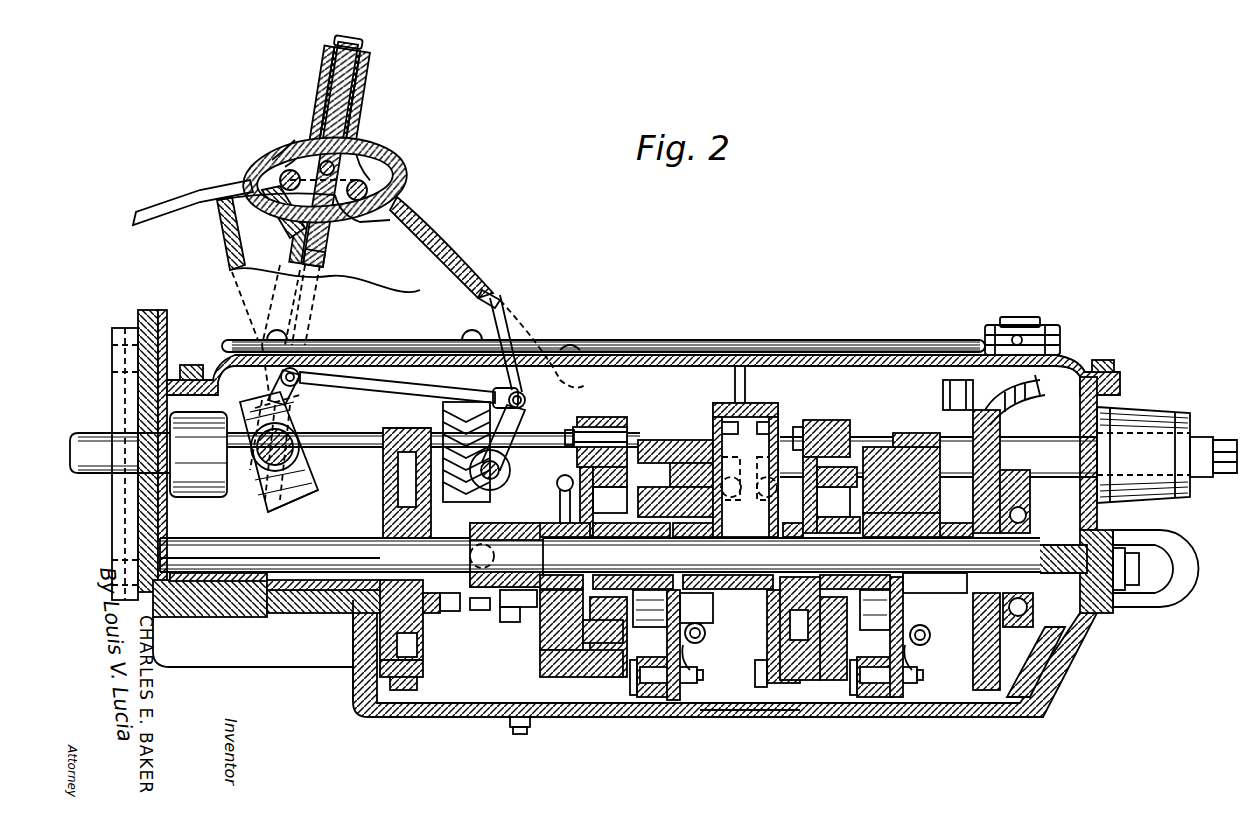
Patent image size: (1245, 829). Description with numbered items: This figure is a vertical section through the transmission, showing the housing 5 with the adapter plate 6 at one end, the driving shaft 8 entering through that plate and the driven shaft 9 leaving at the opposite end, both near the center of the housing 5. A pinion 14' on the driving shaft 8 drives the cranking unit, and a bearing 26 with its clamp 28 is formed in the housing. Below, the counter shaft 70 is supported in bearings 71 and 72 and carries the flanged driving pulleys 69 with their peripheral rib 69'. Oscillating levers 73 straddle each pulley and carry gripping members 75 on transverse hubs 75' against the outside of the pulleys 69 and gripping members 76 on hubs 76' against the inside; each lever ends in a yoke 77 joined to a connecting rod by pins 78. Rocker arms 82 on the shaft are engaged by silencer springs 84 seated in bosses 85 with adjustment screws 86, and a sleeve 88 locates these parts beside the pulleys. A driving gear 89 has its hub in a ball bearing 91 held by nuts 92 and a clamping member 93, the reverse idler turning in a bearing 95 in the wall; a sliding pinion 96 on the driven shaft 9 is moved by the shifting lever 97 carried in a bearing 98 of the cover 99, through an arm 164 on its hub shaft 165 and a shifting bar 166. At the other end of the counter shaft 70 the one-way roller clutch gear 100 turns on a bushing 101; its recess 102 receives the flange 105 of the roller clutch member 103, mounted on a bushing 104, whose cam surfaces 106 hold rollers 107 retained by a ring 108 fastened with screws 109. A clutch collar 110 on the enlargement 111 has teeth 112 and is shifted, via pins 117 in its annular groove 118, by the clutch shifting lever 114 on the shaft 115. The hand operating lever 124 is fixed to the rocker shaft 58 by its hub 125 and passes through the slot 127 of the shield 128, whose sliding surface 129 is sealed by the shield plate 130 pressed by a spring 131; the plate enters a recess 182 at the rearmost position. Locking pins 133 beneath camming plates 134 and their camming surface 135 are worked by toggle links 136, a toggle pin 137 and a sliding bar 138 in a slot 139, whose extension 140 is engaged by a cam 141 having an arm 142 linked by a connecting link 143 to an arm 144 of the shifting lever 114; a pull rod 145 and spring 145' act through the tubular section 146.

The housing 5 is at (1040, 710).
The adapter plate 6 is at (160, 312).
The driving shaft 8 is at (94, 445).
The driven shaft 9 is at (1205, 440).
The pinion 14' is at (466, 433).
The bearing 26 is at (752, 717).
The clamp 28 is at (735, 362).
The rocker shaft 58 is at (263, 466).
The flanged driving pulleys 69 is at (600, 555).
The bolt 69' is at (758, 717).
The counter shaft 70 is at (260, 560).
The bearing 71 is at (230, 590).
The bearing 72 is at (1050, 675).
The oscillating levers 73 is at (680, 605).
The gripping members 75 is at (765, 565).
The transverse hubs 75' is at (740, 569).
The gripping members 76 is at (765, 558).
The transverse hubs 76' is at (712, 583).
The yoke 77 is at (915, 697).
The pins 78 is at (880, 697).
The rocker arms 82 is at (950, 540).
The silencer springs 84 is at (930, 630).
The bosses 85 is at (915, 655).
The adjustment screws 86 is at (926, 637).
The sleeve 88 is at (940, 593).
The driving gear 89 is at (985, 692).
The ball bearing 91 is at (1066, 660).
The nuts 92 is at (1104, 622).
The clamping member 93 is at (1015, 495).
The bearing 95 is at (1130, 592).
The pinion 96 is at (977, 400).
The shifting lever 97 is at (1030, 400).
The bearing 98 is at (1045, 395).
The cover 99 is at (890, 355).
The one-way roller clutch gear 100 is at (396, 705).
The bushing 101 is at (320, 583).
The recess 102 is at (417, 683).
The roller clutch member 103 is at (458, 610).
The bushing 104 is at (437, 613).
The flange 105 is at (372, 612).
The cam surfaces 106 is at (362, 678).
The rollers 107 is at (423, 650).
The retaining ring 108 is at (425, 668).
The screws 109 is at (430, 428).
The clutch collar 110 is at (497, 487).
The enlargement 111 is at (508, 588).
The teeth 112 is at (440, 543).
The clutch shifting lever 114 is at (507, 478).
The shaft 115 is at (499, 470).
The pins 117 is at (497, 553).
The annular groove 118 is at (488, 612).
The hand operating lever 124 is at (325, 245).
The hub 125 is at (317, 487).
The slot 127 is at (492, 283).
The shield 128 is at (505, 312).
The sliding surface 129 is at (415, 280).
The shield plate 130 is at (445, 237).
The spring 131 is at (375, 68).
The locking pins 133 is at (250, 155).
The locking pin camming plates 134 is at (335, 166).
The camming surface 135 is at (407, 180).
The toggle links 136 is at (362, 184).
The toggle pin 137 is at (312, 165).
The sliding bar 138 is at (298, 232).
The slot 139 is at (300, 258).
The extension 140 is at (300, 395).
The cam 141 is at (300, 412).
The arm 142 is at (280, 380).
The connecting link 143 is at (375, 380).
The arm 144 is at (600, 418).
The pull rod 145 is at (357, 111).
The spring 145' is at (374, 96).
The tubular section 146 is at (365, 42).
The arm 164 is at (1062, 340).
The hub shaft 165 is at (1016, 318).
The shifting bar 166 is at (772, 340).
The recess 182 is at (567, 349).